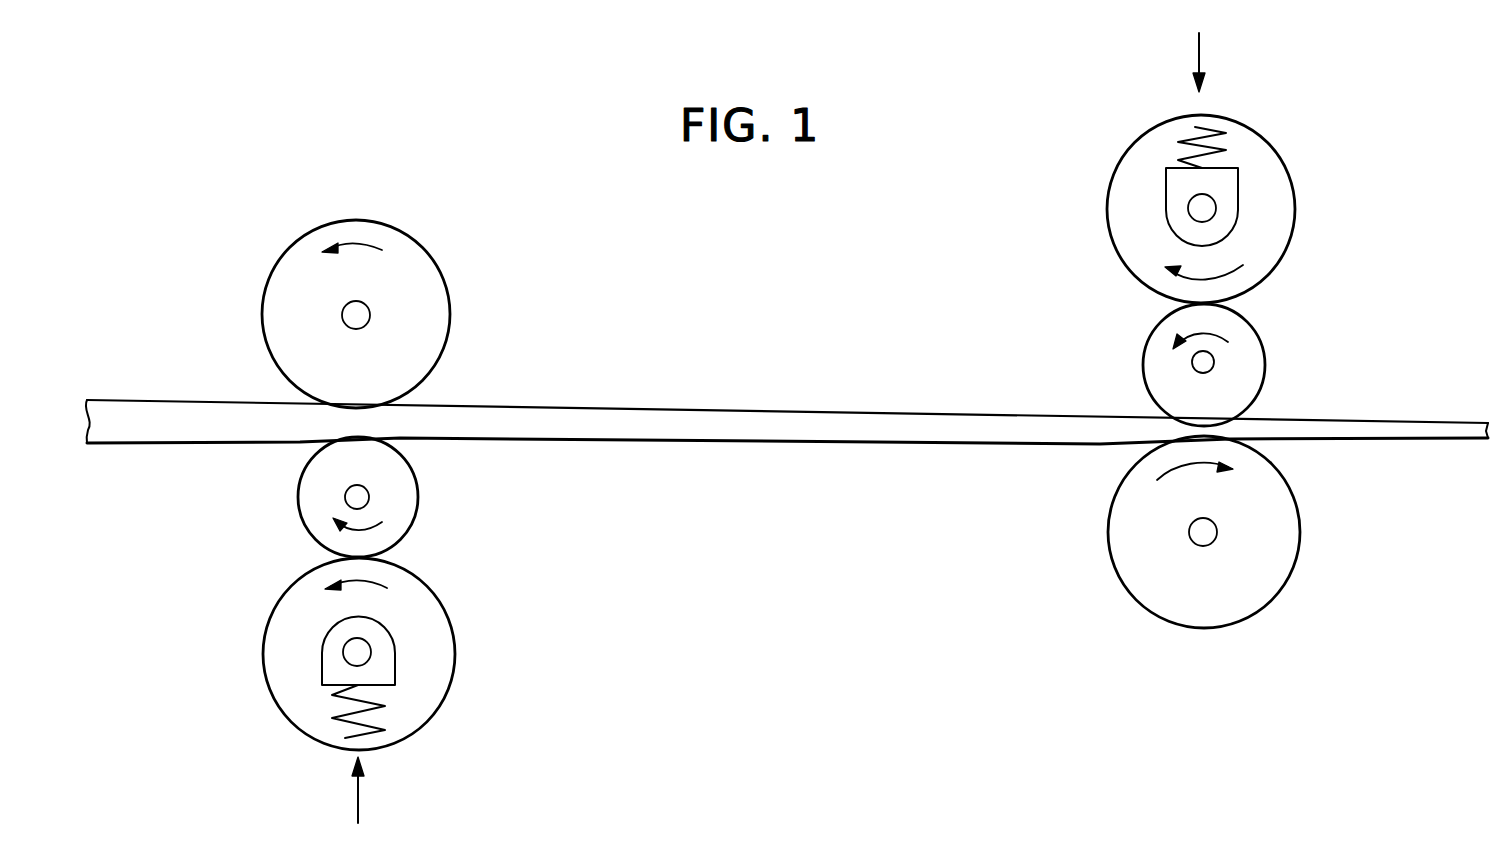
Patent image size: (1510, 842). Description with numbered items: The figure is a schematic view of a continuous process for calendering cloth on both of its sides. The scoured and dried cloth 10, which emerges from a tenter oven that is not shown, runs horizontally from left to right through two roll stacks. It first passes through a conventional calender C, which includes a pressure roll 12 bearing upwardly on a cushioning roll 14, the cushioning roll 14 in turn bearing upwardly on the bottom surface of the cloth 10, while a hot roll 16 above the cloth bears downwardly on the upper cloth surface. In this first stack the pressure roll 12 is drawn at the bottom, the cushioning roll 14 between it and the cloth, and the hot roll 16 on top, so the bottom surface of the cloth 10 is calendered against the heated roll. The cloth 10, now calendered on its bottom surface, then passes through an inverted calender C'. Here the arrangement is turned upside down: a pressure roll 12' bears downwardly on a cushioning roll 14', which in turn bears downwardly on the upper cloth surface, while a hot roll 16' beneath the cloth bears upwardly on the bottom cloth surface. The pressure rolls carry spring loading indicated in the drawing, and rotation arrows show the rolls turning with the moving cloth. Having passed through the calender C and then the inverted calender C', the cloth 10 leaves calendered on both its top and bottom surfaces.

The cloth 10 is at (160, 446).
The pressure roll 12 is at (394, 690).
The cushioning roll 14 is at (410, 497).
The hot roll 16 is at (396, 314).
The pressure roll 12' is at (1138, 168).
The cushioning roll 14' is at (1136, 365).
The hot roll 16' is at (1165, 541).
The calender C is at (470, 175).
The inverted calender C' is at (1329, 94).